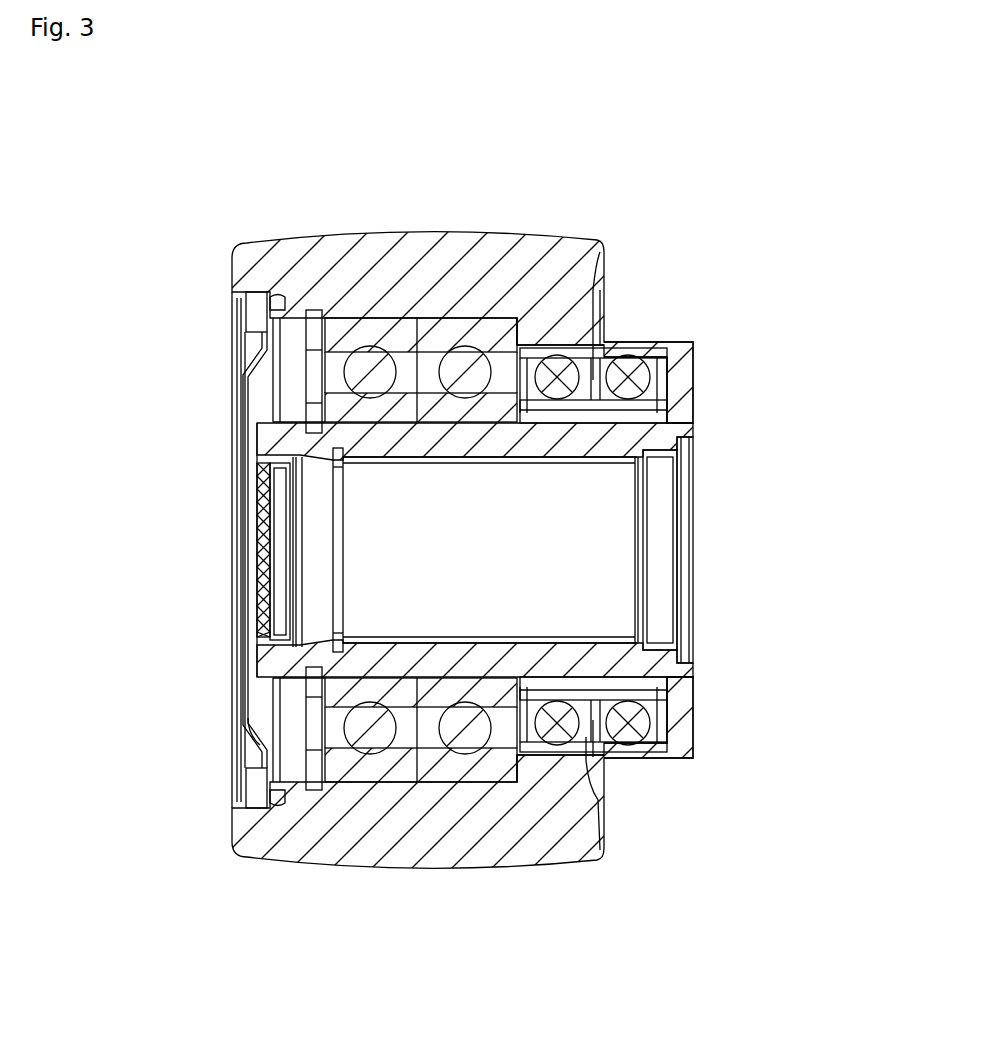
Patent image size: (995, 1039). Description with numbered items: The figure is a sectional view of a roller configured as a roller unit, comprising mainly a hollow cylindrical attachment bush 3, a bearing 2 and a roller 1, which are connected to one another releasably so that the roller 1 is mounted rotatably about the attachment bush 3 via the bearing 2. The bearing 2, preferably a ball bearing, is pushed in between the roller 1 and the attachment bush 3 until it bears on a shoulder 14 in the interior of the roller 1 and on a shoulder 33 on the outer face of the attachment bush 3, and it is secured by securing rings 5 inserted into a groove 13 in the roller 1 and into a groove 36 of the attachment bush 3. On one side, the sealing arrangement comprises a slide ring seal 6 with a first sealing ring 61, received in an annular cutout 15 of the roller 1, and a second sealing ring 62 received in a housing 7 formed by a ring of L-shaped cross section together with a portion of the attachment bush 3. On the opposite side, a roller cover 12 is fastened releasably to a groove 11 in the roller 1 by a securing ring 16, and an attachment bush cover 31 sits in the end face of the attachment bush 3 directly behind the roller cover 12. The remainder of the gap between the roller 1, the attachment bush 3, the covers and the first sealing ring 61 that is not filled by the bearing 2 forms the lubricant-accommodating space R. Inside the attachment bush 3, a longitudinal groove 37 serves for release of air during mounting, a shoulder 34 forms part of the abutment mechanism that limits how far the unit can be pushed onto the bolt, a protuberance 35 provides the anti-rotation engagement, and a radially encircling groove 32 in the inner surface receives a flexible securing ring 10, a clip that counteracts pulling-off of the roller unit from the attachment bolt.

The roller 1 is at (377, 229).
The bearing 2 is at (415, 318).
The attachment bush 3 is at (695, 430).
The securing ring 5 is at (300, 341).
The slide ring seal 6 is at (611, 348).
The housing 7 is at (693, 342).
The securing ring 10 is at (262, 628).
The groove 11 is at (260, 298).
The roller cover 12 is at (255, 640).
The groove 13 is at (310, 307).
The shoulder 14 is at (517, 320).
The annular cutout 15 is at (580, 757).
The securing ring 16 is at (238, 304).
The attachment bush cover 31 is at (262, 520).
The groove 32 is at (290, 662).
The shoulder 33 is at (690, 662).
The shoulder 34 is at (660, 645).
The protuberance 35 is at (660, 449).
The groove 36 is at (262, 445).
The groove 37 is at (597, 463).
The first sealing ring 61 is at (585, 355).
The second sealing ring 62 is at (641, 365).
The lubricant-accommodating space R is at (288, 733).